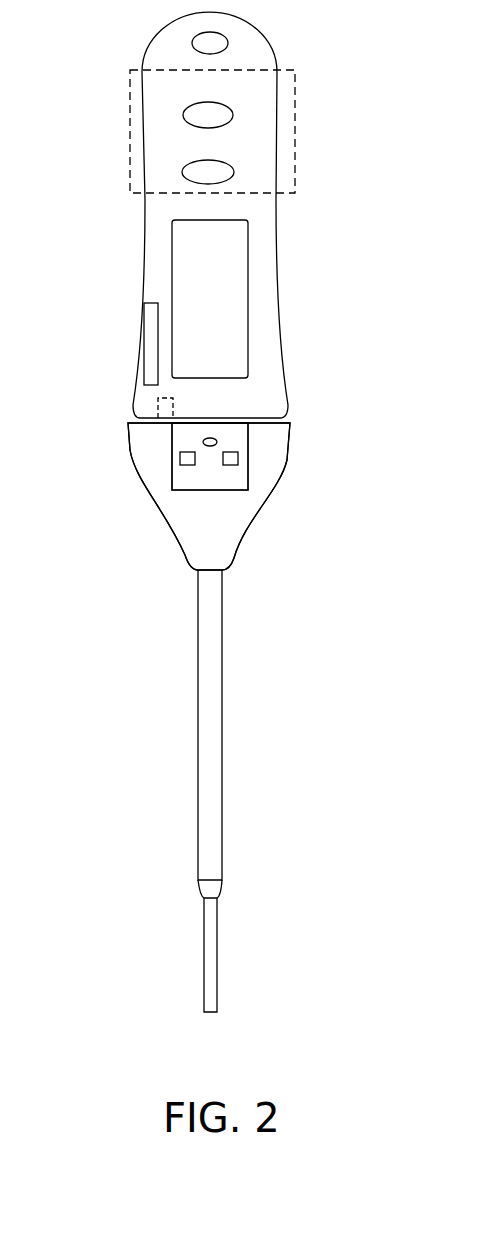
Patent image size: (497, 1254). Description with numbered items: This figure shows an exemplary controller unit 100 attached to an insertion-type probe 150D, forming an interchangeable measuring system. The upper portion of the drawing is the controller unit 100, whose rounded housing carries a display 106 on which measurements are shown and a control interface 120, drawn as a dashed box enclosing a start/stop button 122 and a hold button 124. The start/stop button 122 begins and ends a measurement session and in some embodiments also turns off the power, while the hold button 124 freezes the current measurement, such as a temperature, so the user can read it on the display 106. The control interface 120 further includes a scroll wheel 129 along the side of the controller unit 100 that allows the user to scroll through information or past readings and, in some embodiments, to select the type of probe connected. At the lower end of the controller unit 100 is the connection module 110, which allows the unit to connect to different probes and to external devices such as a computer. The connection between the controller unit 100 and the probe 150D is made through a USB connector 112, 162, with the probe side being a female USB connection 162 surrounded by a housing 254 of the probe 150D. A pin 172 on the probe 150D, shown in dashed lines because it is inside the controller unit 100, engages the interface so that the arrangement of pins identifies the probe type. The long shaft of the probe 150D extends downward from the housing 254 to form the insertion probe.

The controller unit 100 is at (133, 30).
The control interface 120 is at (143, 300).
The start/stop button 122 is at (230, 110).
The hold button 124 is at (210, 167).
The display 106 is at (213, 317).
The scroll wheel 129 is at (143, 345).
The pin 172 is at (172, 424).
The connection module 110 is at (278, 448).
The housing 254 is at (227, 523).
The USB connector 112 is at (227, 480).
The USB connector 162 is at (210, 456).
The probe 150D is at (250, 687).